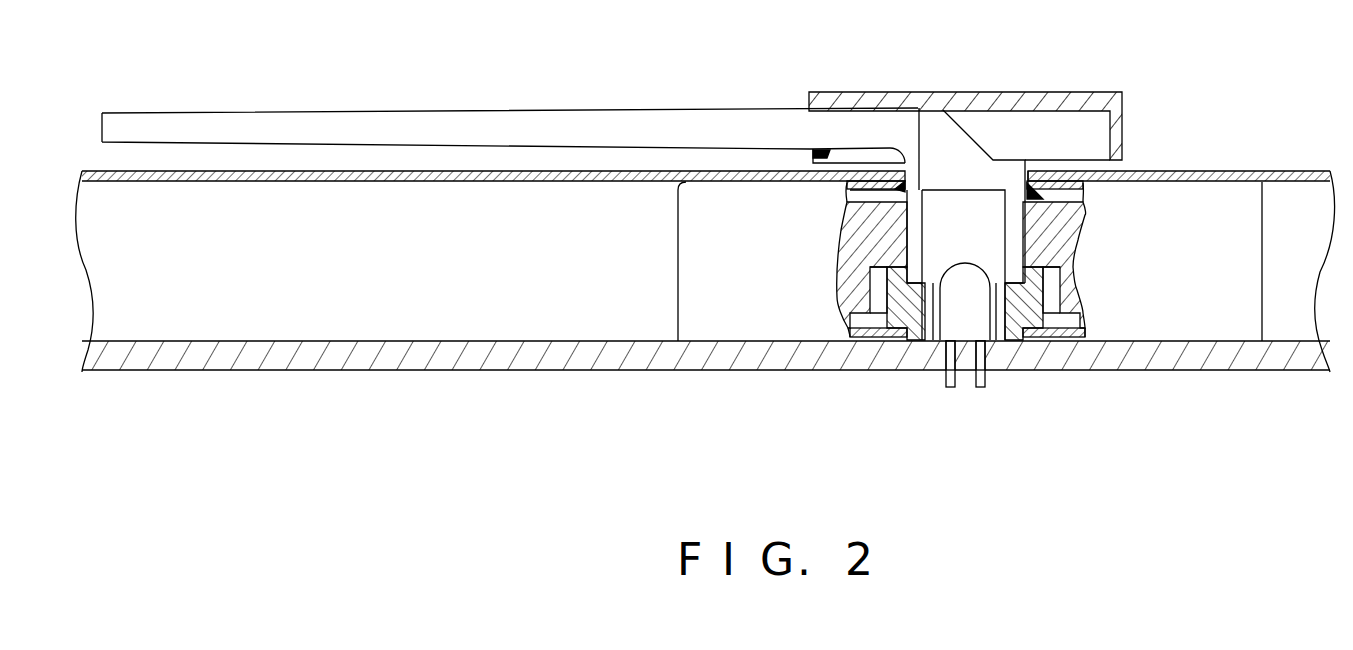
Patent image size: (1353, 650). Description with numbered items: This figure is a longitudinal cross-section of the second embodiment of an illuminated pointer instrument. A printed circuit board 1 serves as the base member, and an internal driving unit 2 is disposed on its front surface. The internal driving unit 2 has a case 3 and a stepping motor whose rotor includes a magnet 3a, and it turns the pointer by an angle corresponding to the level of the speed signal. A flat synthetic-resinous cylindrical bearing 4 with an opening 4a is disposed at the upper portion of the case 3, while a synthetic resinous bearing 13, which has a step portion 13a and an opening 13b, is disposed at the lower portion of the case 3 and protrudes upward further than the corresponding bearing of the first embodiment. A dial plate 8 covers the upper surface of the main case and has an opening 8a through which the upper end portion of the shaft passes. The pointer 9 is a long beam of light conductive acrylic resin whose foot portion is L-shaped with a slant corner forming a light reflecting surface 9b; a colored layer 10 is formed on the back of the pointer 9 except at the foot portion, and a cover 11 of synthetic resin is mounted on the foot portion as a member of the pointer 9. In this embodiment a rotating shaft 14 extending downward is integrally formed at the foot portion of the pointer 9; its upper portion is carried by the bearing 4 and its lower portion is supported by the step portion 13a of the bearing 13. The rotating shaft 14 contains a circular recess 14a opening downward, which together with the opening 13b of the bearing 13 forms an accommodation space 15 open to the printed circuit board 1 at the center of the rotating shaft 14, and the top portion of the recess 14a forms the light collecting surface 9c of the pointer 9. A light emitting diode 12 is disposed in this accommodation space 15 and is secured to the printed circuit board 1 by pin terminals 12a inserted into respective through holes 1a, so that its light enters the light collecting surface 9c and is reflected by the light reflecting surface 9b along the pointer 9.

The printed circuit board 1 is at (575, 371).
The through holes 1a is at (962, 372).
The internal driving unit 2 is at (1268, 222).
The case 3 is at (882, 340).
The magnet 3a is at (870, 290).
The bearing 4 is at (1085, 192).
The opening 4a is at (918, 181).
The dial plate 8 is at (1185, 170).
The opening 8a is at (1030, 182).
The pointer 9 is at (660, 111).
The light reflecting surface 9b is at (970, 136).
The light collecting surface 9c is at (880, 193).
The colored layer 10 is at (815, 157).
The cover 11 is at (1106, 92).
The light emitting diode 12 is at (1080, 262).
The pin terminals 12a is at (947, 387).
The bearing 13 is at (955, 372).
The step portion 13a is at (860, 337).
The opening 13b is at (1040, 337).
The rotating shaft 14 is at (1085, 215).
The circular recess 14a is at (1088, 238).
The accommodation space 15 is at (935, 247).